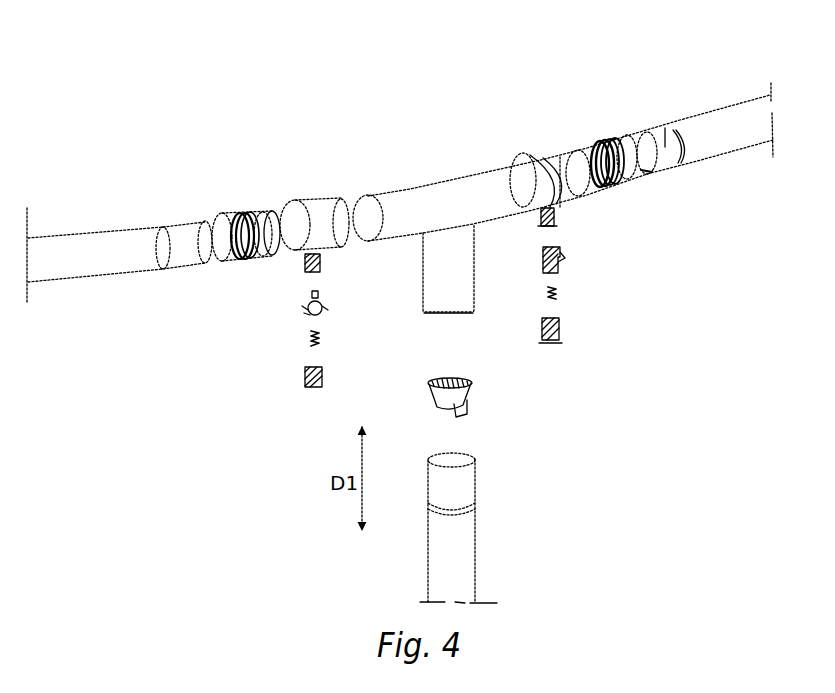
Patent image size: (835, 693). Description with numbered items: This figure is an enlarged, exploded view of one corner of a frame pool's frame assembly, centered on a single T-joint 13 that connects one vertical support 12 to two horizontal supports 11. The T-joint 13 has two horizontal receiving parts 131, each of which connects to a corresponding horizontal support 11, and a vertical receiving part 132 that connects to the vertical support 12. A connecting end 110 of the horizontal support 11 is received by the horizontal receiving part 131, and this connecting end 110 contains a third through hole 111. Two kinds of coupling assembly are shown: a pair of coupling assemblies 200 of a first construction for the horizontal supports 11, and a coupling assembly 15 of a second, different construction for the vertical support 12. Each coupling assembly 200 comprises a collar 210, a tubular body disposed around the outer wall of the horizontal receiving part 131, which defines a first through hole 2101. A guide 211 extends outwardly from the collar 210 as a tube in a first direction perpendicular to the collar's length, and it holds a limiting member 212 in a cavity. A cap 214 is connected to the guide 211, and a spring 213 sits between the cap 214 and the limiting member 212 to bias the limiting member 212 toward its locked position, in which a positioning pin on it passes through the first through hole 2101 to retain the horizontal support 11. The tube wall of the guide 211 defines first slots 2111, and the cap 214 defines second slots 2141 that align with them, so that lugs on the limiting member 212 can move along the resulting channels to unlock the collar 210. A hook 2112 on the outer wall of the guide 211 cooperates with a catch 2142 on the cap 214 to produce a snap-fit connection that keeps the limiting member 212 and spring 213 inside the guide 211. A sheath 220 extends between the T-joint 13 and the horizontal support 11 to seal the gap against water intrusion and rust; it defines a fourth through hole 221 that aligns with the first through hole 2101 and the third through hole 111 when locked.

The horizontal support 11 is at (722, 145).
The connecting end 110 is at (664, 140).
The third through hole 111 is at (650, 173).
The vertical support 12 is at (460, 560).
The T-joint 13 is at (410, 207).
The horizontal receiving part 131 is at (500, 197).
The vertical receiving part 132 is at (447, 290).
The coupling assembly 15 is at (444, 381).
The coupling assembly 200 is at (561, 135).
The collar 210 is at (562, 157).
The first through hole 2101 is at (531, 212).
The guide 211 is at (554, 221).
The first slot 2111 is at (542, 228).
The hook 2112 is at (322, 265).
The limiting member 212 is at (560, 268).
The spring 213 is at (557, 295).
The cap 214 is at (553, 345).
The second slot 2141 is at (540, 328).
The catch 2142 is at (325, 377).
The sheath 220 is at (620, 137).
The fourth through hole 221 is at (591, 143).